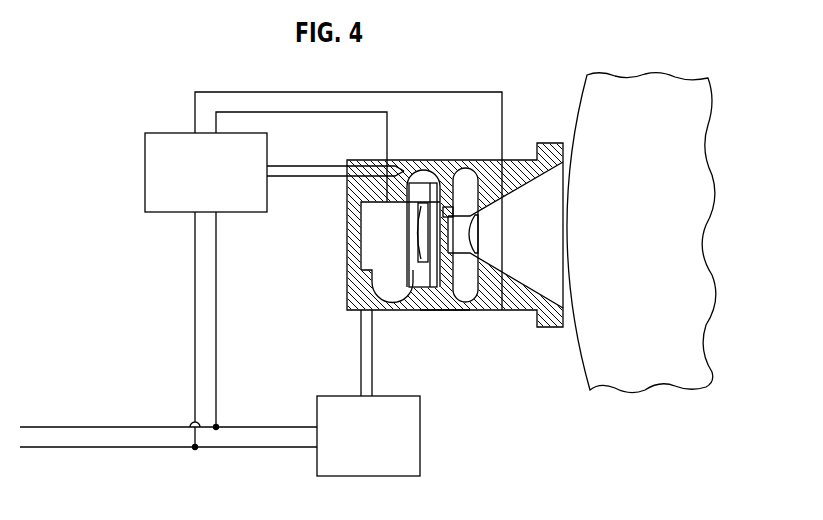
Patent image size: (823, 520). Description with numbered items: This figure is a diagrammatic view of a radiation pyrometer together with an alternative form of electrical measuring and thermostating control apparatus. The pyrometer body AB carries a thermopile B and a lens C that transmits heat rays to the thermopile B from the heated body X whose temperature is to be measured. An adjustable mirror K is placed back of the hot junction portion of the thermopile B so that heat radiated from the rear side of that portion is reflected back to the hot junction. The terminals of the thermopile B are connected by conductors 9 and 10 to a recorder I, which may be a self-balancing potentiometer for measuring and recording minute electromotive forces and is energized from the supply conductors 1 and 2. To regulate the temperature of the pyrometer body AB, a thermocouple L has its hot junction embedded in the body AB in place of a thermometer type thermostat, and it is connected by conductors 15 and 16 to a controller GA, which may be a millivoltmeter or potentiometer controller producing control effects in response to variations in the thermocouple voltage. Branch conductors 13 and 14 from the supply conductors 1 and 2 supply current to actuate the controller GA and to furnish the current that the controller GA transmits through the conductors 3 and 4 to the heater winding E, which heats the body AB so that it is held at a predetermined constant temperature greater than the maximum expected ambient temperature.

The supply conductor 1 is at (92, 427).
The supply conductor 2 is at (98, 450).
The conductor 3 is at (344, 112).
The conductor 4 is at (345, 92).
The conductor 9 is at (360, 343).
The conductor 10 is at (374, 343).
The branch conductor 13 is at (220, 316).
The branch conductor 14 is at (192, 316).
The conductor 15 is at (321, 164).
The conductor 16 is at (321, 178).
The controller GA is at (152, 145).
The recorder I is at (415, 406).
The pyrometer body AB is at (430, 167).
The thermocouple L is at (393, 172).
The adjustable mirror K is at (418, 227).
The thermopile B is at (443, 208).
The lens C is at (480, 232).
The heater winding E is at (445, 311).
The heated body X is at (592, 107).